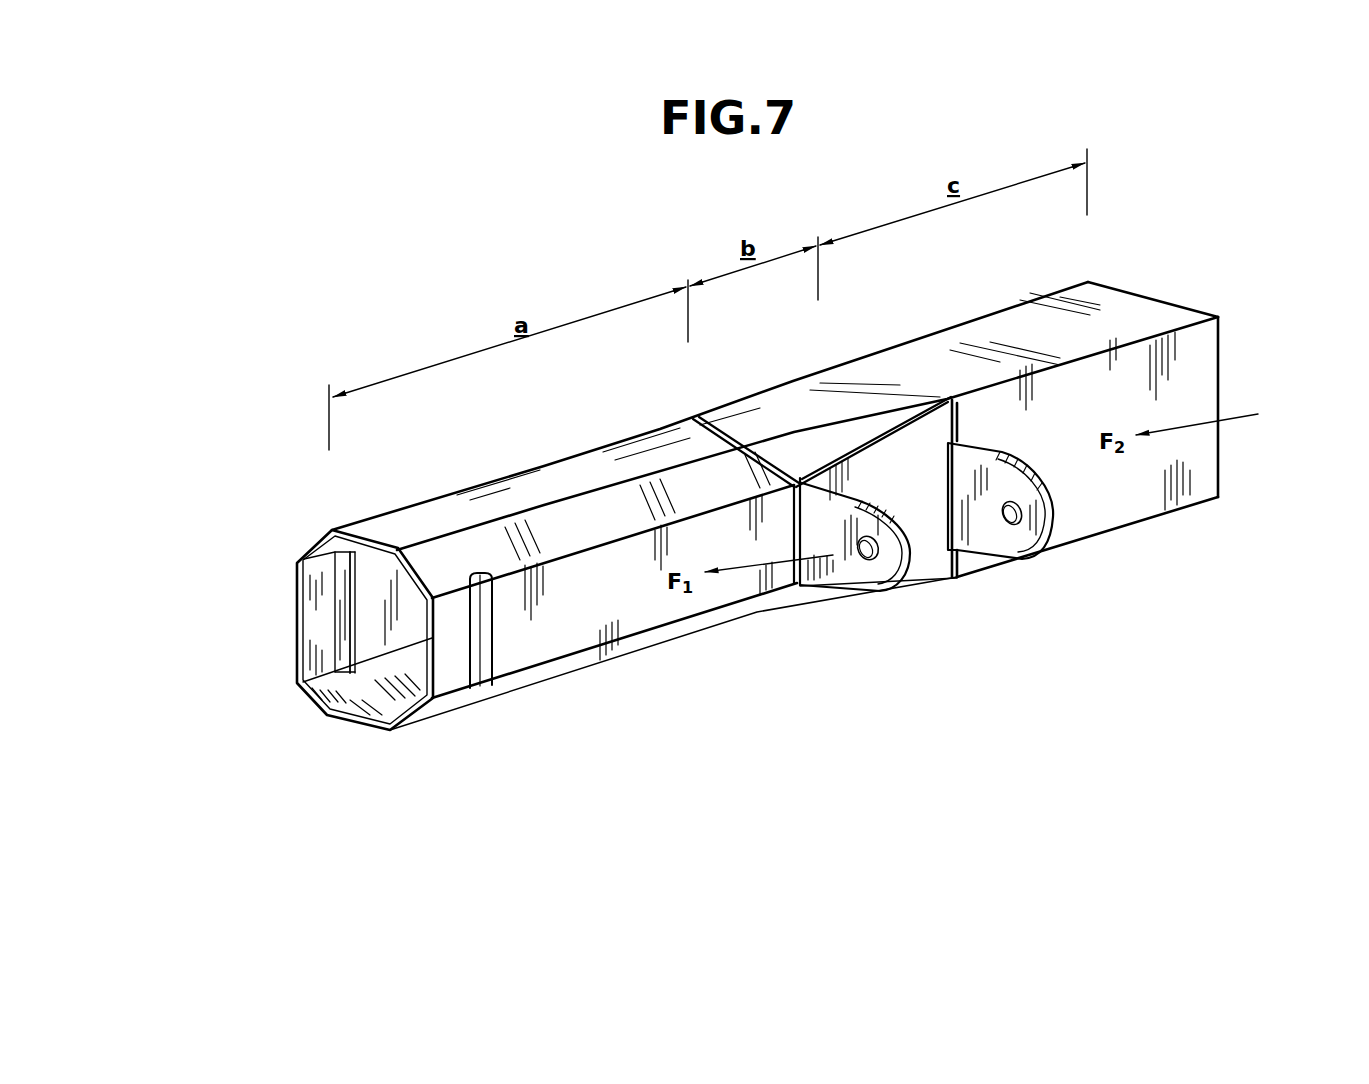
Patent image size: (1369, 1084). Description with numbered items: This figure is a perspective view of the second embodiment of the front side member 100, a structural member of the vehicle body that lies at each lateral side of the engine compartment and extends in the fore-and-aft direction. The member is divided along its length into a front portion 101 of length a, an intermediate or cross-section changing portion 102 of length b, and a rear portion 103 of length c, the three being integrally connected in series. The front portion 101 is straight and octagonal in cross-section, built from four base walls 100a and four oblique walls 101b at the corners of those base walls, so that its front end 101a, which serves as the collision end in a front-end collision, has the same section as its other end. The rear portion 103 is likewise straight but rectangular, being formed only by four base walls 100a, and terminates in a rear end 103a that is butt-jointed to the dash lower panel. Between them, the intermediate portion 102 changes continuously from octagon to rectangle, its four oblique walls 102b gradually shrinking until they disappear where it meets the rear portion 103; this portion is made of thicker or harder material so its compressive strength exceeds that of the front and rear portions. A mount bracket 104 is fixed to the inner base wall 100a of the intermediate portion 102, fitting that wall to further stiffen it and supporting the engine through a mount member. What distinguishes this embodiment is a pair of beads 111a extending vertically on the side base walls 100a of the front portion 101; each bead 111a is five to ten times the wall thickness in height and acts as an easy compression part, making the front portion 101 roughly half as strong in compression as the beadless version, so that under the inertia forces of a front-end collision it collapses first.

The front side member 100 is at (684, 553).
The base wall 100a is at (532, 455).
The front portion 101 is at (495, 497).
The front end 101a is at (297, 667).
The oblique wall 101b is at (588, 520).
The intermediate portion 102 is at (809, 509).
The oblique wall of the intermediate portion 102b is at (842, 660).
The rear portion 103 is at (1117, 418).
The rear end 103a is at (1220, 370).
The mount bracket 104 is at (968, 465).
The bead 111a is at (340, 612).